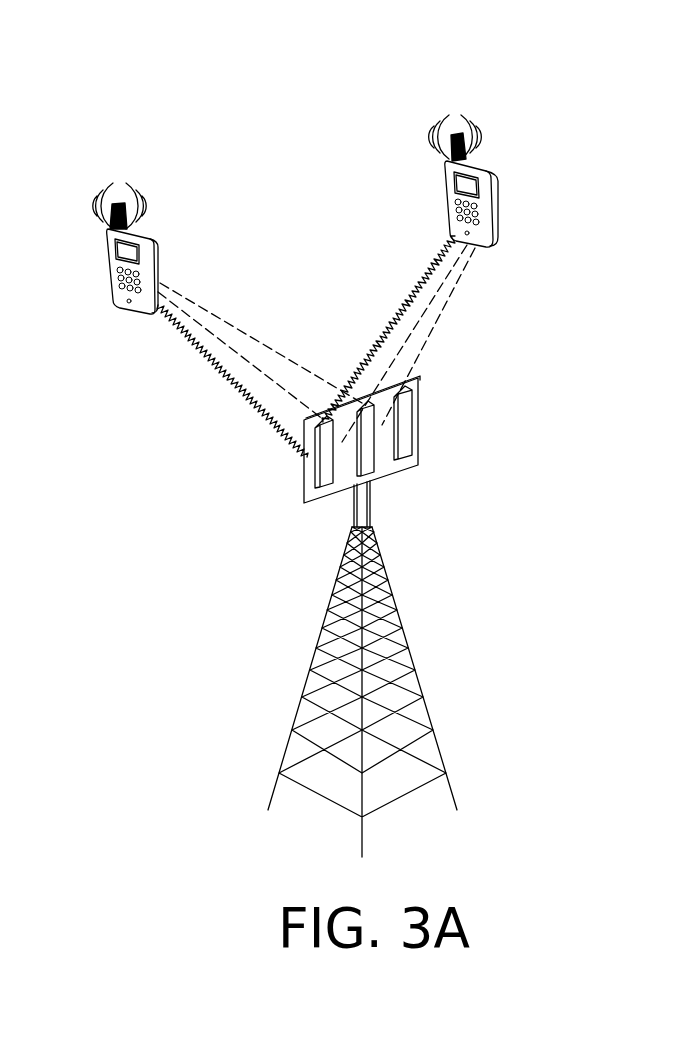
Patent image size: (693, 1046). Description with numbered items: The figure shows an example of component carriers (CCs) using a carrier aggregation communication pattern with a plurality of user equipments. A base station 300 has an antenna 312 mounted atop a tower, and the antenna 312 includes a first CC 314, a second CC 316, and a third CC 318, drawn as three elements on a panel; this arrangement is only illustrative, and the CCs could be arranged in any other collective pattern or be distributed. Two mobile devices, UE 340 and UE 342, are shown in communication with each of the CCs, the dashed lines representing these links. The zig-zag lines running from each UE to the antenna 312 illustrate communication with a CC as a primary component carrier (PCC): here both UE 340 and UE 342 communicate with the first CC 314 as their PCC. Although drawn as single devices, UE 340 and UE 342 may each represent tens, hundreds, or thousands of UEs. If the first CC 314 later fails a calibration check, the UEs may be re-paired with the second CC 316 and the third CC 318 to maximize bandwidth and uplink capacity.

The base station 300 is at (97, 123).
The antenna 312 is at (347, 474).
The first CC 314 is at (315, 480).
The second CC 316 is at (375, 465).
The third CC 318 is at (413, 415).
The UE 340 is at (108, 263).
The UE 342 is at (500, 195).